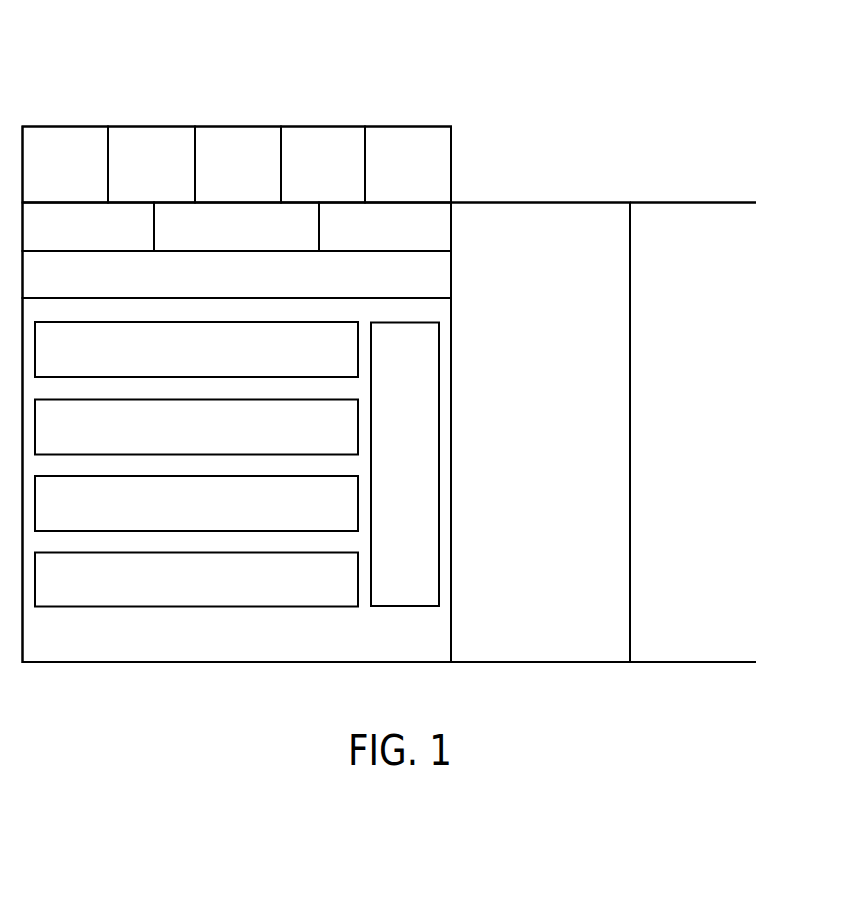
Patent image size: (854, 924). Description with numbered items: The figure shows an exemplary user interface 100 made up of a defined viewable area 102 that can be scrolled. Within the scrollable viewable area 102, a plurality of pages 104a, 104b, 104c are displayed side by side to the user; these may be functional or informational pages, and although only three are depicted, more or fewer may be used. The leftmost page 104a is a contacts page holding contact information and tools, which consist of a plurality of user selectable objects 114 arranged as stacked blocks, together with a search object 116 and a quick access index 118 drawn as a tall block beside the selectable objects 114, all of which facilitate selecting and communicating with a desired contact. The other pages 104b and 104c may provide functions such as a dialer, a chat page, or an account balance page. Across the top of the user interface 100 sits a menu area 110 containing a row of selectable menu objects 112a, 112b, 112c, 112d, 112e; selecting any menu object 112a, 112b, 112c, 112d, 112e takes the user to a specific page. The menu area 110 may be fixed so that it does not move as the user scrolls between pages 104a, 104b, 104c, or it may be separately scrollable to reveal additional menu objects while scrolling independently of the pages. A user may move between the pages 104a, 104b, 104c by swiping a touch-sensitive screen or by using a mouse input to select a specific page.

The user interface 100 is at (58, 42).
The defined viewable area 102 is at (92, 663).
The page 104a is at (211, 649).
The page 104b is at (513, 394).
The page 104c is at (675, 395).
The menu area 110 is at (463, 157).
The selectable menu object 112a is at (40, 178).
The selectable menu object 112b is at (125, 178).
The selectable menu object 112c is at (211, 178).
The selectable menu object 112d is at (296, 178).
The selectable menu object 112e is at (381, 178).
The user selectable object 114 is at (62, 237).
The search object 116 is at (211, 285).
The quick access index 118 is at (383, 476).